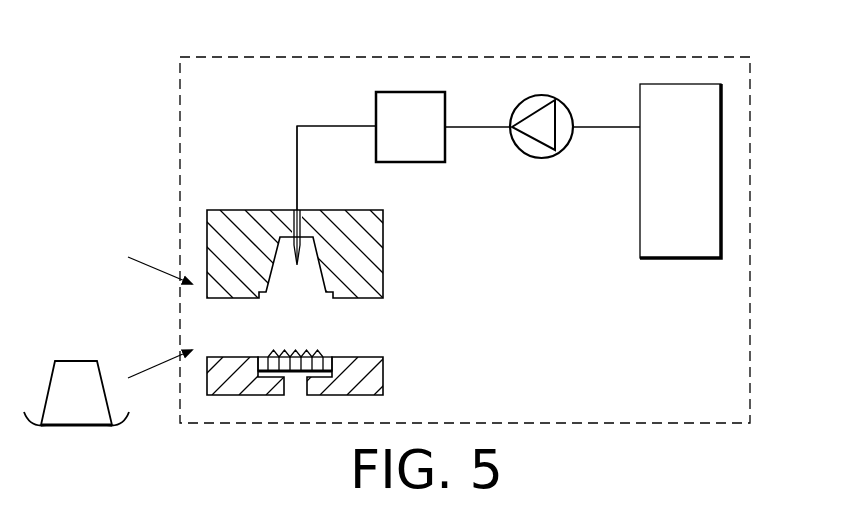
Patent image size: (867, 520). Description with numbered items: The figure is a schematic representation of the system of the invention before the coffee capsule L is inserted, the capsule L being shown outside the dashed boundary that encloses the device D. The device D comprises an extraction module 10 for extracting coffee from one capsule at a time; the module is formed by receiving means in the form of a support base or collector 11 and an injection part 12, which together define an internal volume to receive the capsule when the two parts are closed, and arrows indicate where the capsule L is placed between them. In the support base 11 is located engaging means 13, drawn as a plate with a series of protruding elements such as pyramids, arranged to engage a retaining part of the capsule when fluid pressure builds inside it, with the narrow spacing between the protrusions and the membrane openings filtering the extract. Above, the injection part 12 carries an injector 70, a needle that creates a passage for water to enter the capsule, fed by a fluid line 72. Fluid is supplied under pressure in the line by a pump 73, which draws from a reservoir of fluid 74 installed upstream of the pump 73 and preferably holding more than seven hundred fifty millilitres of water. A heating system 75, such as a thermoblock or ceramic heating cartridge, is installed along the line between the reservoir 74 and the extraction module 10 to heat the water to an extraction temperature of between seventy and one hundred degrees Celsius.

The extraction module 10 is at (463, 215).
The support base or collector 11 is at (383, 378).
The injection part 12 is at (383, 222).
The engaging means 13 is at (325, 356).
The injector 70 is at (291, 222).
The fluid line 72 is at (310, 126).
The pump 73 is at (540, 95).
The reservoir of fluid 74 is at (722, 240).
The heating system 75 is at (410, 92).
The device D is at (752, 62).
The coffee capsule L is at (76, 393).